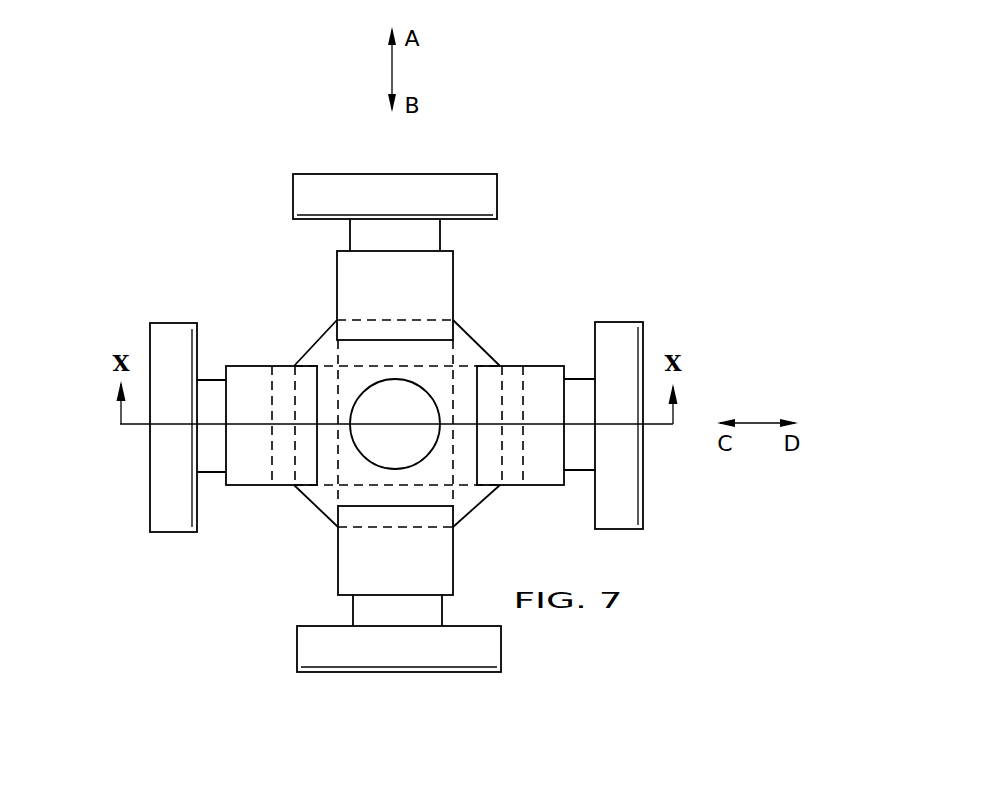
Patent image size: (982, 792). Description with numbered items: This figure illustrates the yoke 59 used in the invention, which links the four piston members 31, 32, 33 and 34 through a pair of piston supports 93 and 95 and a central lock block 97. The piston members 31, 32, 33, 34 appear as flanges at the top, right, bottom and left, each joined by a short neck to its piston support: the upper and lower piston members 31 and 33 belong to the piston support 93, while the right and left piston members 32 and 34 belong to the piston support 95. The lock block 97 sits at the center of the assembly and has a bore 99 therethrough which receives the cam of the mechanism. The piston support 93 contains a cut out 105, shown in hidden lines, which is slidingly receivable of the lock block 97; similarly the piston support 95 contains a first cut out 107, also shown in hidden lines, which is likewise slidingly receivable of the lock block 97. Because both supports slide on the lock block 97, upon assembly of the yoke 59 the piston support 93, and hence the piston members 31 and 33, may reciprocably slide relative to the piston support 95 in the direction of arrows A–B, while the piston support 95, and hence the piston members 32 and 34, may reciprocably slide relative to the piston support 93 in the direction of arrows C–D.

The piston member 31 is at (457, 173).
The piston member 32 is at (643, 328).
The piston member 33 is at (477, 673).
The piston member 34 is at (147, 483).
The yoke 59 is at (571, 221).
The piston support 93 is at (455, 270).
The piston support 95 is at (538, 362).
The lock block 97 is at (315, 343).
The bore 99 is at (361, 393).
The cut out 105 is at (423, 317).
The first cut out 107 is at (500, 455).